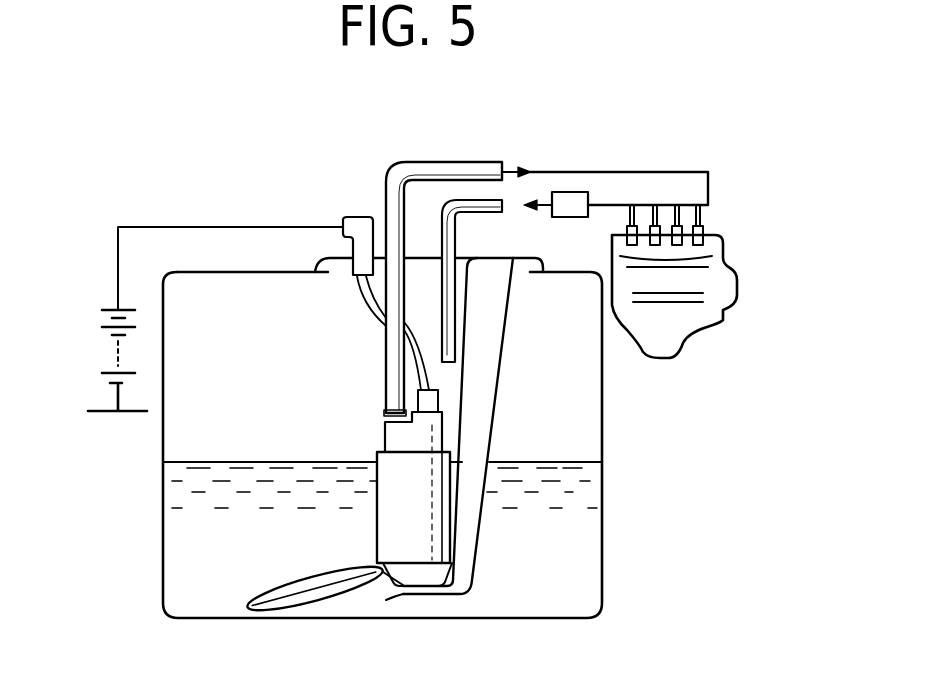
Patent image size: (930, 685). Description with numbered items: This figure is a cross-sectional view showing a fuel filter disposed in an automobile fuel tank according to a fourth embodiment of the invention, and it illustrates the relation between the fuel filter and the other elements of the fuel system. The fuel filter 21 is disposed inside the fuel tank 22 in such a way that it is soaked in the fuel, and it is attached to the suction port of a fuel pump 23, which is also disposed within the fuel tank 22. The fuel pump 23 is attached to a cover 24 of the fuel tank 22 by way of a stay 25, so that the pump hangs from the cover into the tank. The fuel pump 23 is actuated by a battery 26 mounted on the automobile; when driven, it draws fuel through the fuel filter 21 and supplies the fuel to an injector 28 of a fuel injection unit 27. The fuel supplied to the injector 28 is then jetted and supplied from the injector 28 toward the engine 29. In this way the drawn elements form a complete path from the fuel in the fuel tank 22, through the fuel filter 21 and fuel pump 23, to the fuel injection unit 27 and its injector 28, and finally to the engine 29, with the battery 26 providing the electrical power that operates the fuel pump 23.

The fuel filter 21 is at (283, 583).
The fuel tank 22 is at (602, 442).
The fuel pump 23 is at (377, 511).
The cover 24 is at (383, 257).
The stay 25 is at (488, 400).
The battery 26 is at (105, 308).
The fuel injection unit 27 is at (710, 227).
The injector 28 is at (627, 228).
The engine 29 is at (720, 327).